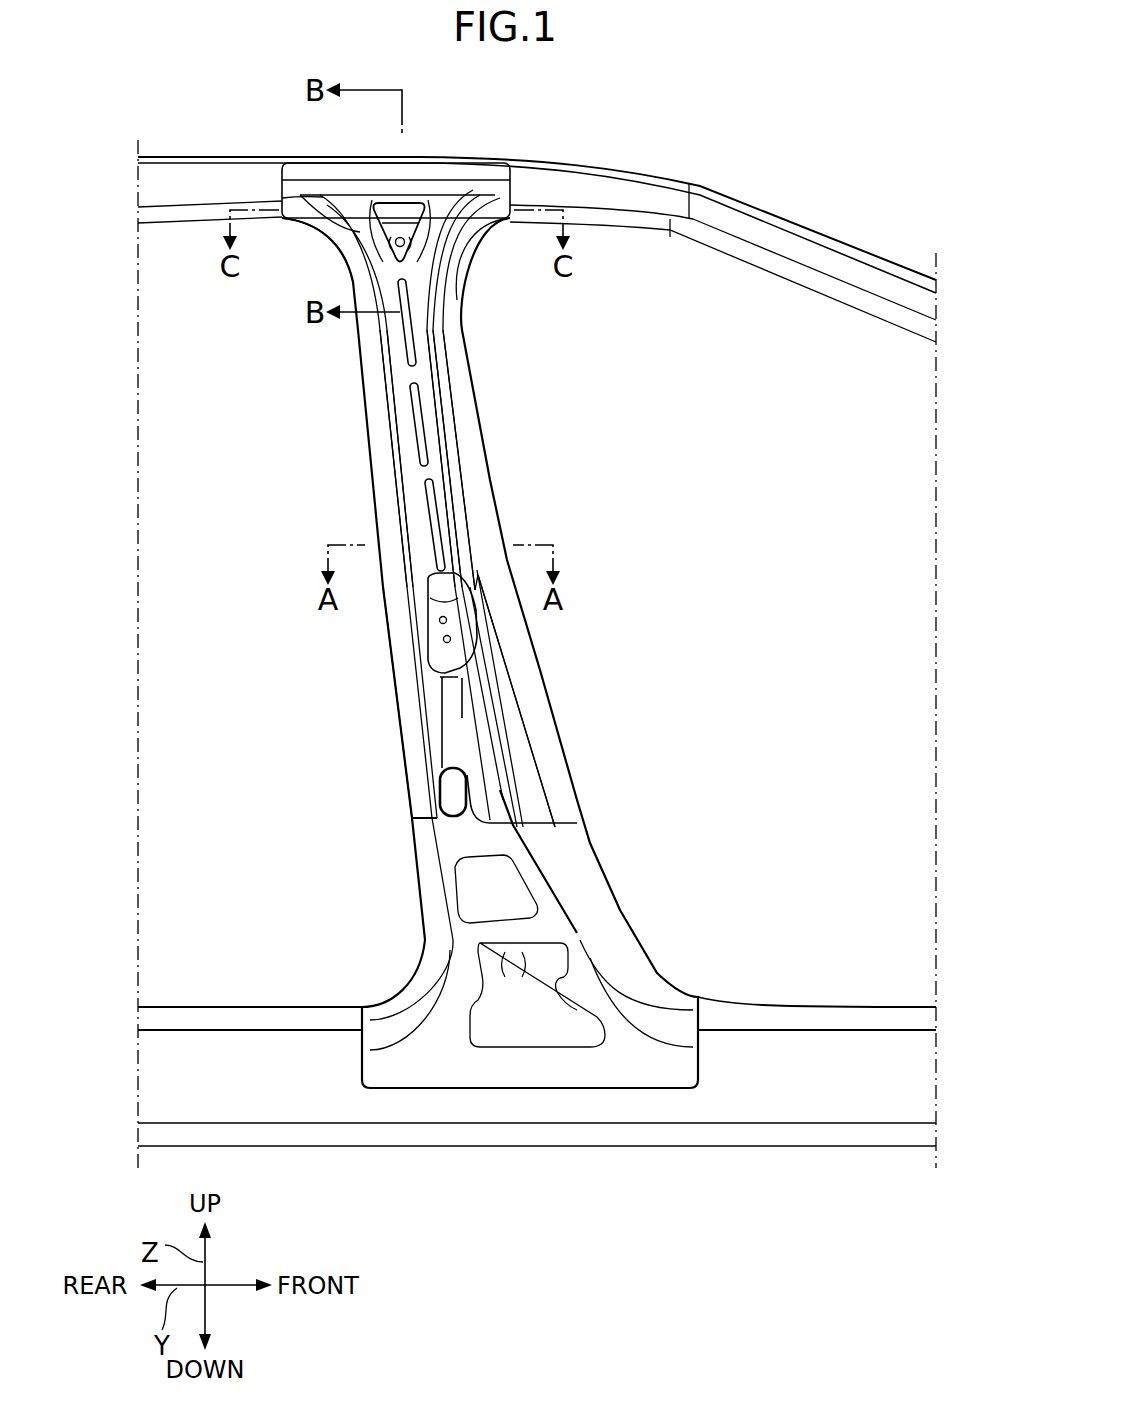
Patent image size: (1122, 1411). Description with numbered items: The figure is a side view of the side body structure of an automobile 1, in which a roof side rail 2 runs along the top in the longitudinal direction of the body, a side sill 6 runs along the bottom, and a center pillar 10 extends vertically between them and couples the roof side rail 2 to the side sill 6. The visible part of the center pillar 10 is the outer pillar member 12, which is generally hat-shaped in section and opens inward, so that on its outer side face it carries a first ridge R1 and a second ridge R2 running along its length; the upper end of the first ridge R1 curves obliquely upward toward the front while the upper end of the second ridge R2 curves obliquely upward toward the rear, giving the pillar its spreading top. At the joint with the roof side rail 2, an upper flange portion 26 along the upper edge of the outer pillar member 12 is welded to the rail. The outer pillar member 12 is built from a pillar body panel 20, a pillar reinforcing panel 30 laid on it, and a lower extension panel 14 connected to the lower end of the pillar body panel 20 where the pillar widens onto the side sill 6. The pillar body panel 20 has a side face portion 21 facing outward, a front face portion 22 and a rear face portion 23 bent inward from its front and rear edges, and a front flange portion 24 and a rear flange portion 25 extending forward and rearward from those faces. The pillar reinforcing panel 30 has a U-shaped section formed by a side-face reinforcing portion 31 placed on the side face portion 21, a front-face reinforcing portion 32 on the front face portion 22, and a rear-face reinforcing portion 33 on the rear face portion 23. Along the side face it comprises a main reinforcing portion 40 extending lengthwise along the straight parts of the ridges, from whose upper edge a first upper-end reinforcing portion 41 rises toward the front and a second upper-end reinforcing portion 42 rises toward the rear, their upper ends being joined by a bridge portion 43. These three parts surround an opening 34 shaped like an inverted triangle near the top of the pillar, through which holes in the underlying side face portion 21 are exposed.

The automobile 1 is at (886, 116).
The roof side rail 2 is at (549, 160).
The side sill 6 is at (582, 1150).
The center pillar 10 is at (546, 392).
The outer pillar member 12 is at (560, 432).
The lower extension panel 14 is at (612, 922).
The pillar body panel 20 is at (482, 447).
The side face portion 21 is at (456, 713).
The front face portion 22 is at (446, 400).
The rear face portion 23 is at (390, 408).
The front flange portion 24 is at (524, 668).
The rear flange portion 25 is at (402, 668).
The upper flange portion 26 is at (355, 193).
The pillar reinforcing panel 30 is at (452, 481).
The side-face reinforcing portion 31 is at (448, 525).
The front-face reinforcing portion 32 is at (431, 343).
The rear-face reinforcing portion 33 is at (381, 343).
The opening 34 is at (335, 195).
The main reinforcing portion 40 is at (418, 470).
The first upper-end reinforcing portion 41 is at (428, 236).
The second upper-end reinforcing portion 42 is at (370, 232).
The bridge portion 43 is at (398, 204).
The first ridge R1 is at (425, 277).
The second ridge R2 is at (351, 267).